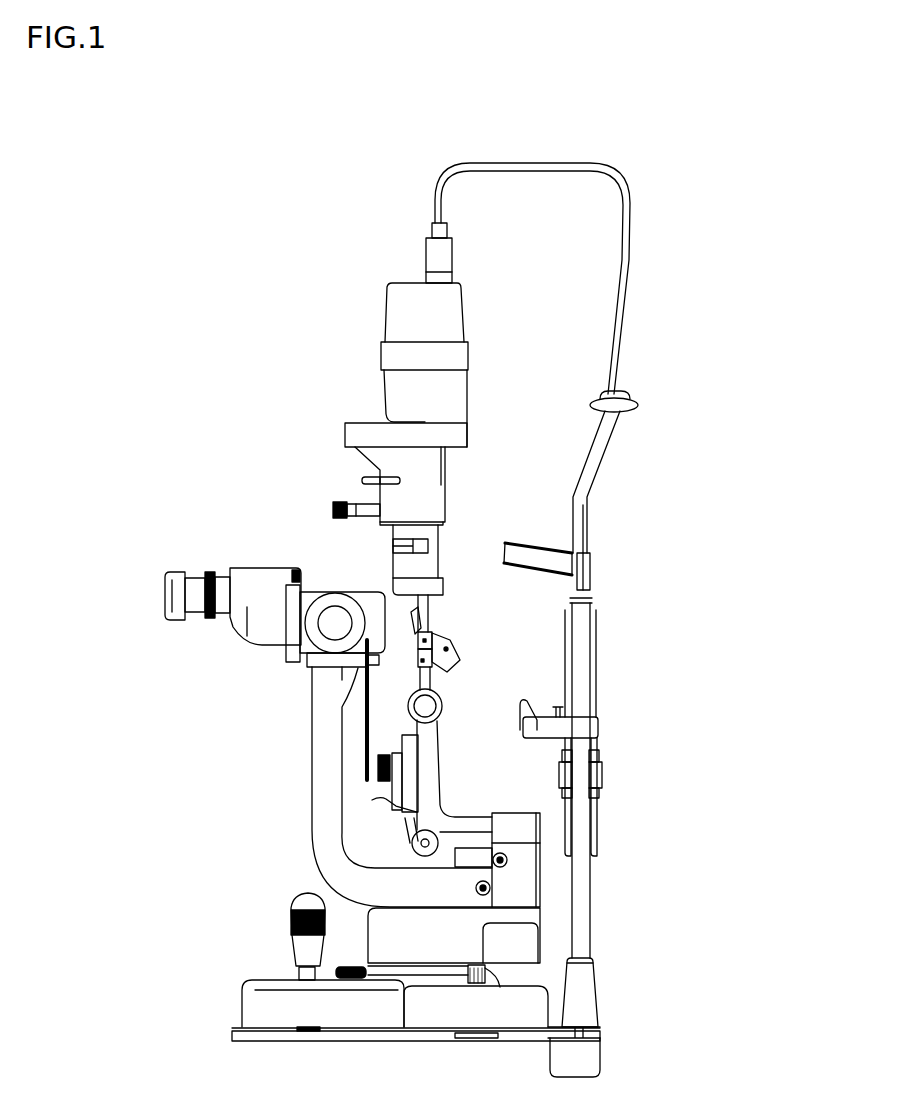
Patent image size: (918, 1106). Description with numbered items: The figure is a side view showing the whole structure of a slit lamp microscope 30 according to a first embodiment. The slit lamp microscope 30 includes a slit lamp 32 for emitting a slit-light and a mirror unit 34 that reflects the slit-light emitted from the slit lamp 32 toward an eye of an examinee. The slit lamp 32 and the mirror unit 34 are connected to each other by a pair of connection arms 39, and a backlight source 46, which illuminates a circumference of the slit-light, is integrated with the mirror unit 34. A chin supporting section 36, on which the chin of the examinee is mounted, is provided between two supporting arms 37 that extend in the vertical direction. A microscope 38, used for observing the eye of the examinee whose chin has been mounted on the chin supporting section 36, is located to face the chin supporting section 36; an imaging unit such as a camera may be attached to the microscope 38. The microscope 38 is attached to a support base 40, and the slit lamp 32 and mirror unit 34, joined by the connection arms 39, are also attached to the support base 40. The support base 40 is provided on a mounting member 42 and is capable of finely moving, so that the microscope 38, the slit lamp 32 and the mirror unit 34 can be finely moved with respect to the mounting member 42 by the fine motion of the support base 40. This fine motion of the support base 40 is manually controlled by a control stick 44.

The slit lamp microscope 30 is at (352, 190).
The slit lamp 32 is at (392, 337).
The mirror unit 34 is at (438, 628).
The chin supporting section 36 is at (530, 714).
The supporting arms 37 is at (582, 898).
The microscope 38 is at (251, 572).
The connection arms 39 is at (435, 606).
The support base 40 is at (386, 921).
The mounting member 42 is at (252, 1002).
The control stick 44 is at (288, 923).
The backlight source 46 is at (452, 656).